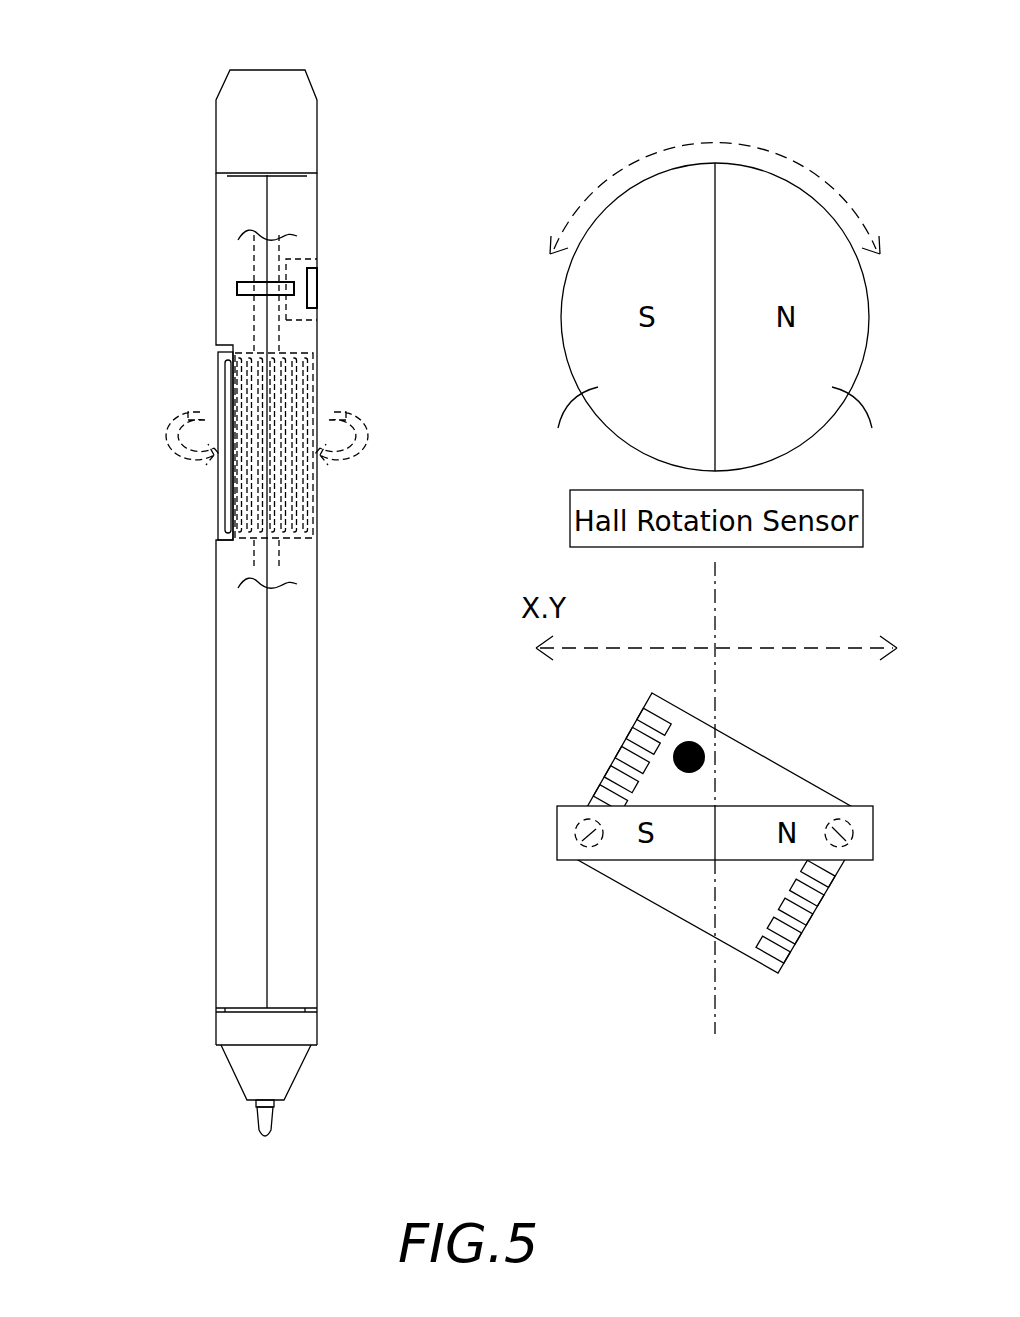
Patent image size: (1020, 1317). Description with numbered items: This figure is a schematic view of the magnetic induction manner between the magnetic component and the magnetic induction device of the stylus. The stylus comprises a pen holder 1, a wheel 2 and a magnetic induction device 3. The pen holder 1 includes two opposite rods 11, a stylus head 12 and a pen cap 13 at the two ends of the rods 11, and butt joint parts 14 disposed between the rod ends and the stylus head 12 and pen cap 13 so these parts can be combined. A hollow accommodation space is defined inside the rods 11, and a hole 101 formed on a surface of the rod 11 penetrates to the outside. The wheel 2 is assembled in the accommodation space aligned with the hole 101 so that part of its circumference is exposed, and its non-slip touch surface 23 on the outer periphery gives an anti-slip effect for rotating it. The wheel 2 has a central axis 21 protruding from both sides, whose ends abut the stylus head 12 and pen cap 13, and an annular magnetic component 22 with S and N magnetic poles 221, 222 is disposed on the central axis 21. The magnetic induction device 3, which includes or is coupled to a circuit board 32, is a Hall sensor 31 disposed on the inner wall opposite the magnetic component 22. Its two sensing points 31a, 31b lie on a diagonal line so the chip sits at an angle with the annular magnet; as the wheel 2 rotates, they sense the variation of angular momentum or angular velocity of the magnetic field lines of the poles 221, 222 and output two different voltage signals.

The pen holder 1 is at (322, 78).
The pen cap 13 is at (298, 120).
The butt joint parts 14 is at (296, 175).
The rods 11 is at (228, 622).
The hole 101 is at (222, 538).
The stylus head 12 is at (296, 1025).
The wheel 2 is at (203, 368).
The central axis 21 is at (246, 212).
The magnetic component 22 is at (457, 339).
The S magnetic pole 221 is at (285, 290).
The N magnetic pole 222 is at (273, 275).
The touch surface 23 is at (238, 350).
The magnetic induction device 3 is at (412, 298).
The circuit board 32 is at (300, 263).
The Hall sensor 31 is at (310, 288).
The first sensing point 31a is at (575, 847).
The second sensing point 31b is at (855, 847).